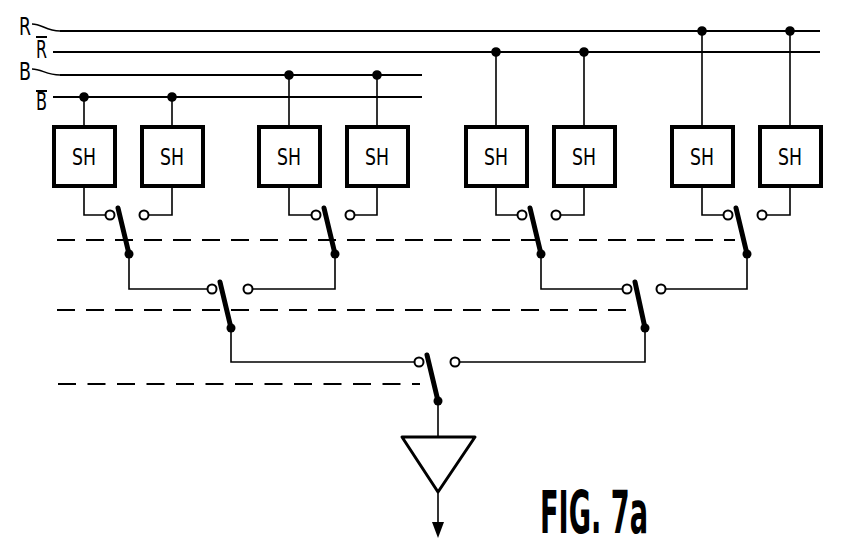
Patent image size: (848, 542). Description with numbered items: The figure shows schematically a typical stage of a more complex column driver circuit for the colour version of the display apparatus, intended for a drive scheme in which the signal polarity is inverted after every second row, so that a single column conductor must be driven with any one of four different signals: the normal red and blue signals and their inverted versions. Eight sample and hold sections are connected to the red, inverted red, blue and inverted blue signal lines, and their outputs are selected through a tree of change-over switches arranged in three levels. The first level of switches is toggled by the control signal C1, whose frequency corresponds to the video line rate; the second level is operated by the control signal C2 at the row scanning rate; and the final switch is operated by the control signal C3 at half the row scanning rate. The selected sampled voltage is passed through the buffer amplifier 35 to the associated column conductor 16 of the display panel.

The buffer amplifier 35 is at (458, 456).
The column conductor 16 is at (453, 516).
The control signal C1 is at (381, 242).
The control signal C2 is at (328, 312).
The control signal C3 is at (223, 385).